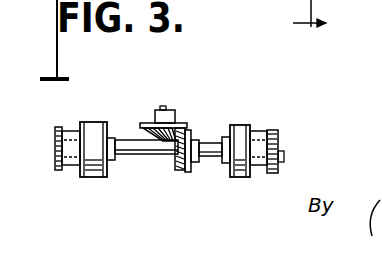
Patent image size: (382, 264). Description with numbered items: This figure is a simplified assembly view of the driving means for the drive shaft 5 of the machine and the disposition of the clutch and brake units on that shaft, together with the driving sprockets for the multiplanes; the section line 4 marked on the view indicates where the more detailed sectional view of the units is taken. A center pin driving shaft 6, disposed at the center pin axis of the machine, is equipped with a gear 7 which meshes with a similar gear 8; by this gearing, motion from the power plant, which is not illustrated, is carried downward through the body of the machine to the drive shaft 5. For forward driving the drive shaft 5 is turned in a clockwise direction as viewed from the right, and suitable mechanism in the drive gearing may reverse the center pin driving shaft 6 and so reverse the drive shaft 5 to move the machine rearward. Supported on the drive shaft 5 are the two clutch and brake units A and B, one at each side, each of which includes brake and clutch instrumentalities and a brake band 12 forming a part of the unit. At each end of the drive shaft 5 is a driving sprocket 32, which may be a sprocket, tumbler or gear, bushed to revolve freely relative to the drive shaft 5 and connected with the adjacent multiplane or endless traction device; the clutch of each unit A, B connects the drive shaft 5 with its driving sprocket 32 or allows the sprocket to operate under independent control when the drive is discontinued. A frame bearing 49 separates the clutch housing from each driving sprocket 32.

The section line 4 is at (309, 25).
The drive shaft 5 is at (143, 145).
The center pin driving shaft 6 is at (166, 108).
The gear 7 is at (193, 131).
The gear 8 is at (180, 172).
The brake band 12 is at (181, 147).
The driving sprocket 32 is at (56, 167).
The frame bearing 49 is at (63, 127).
The clutch and brake unit A is at (90, 127).
The clutch and brake unit B is at (239, 128).